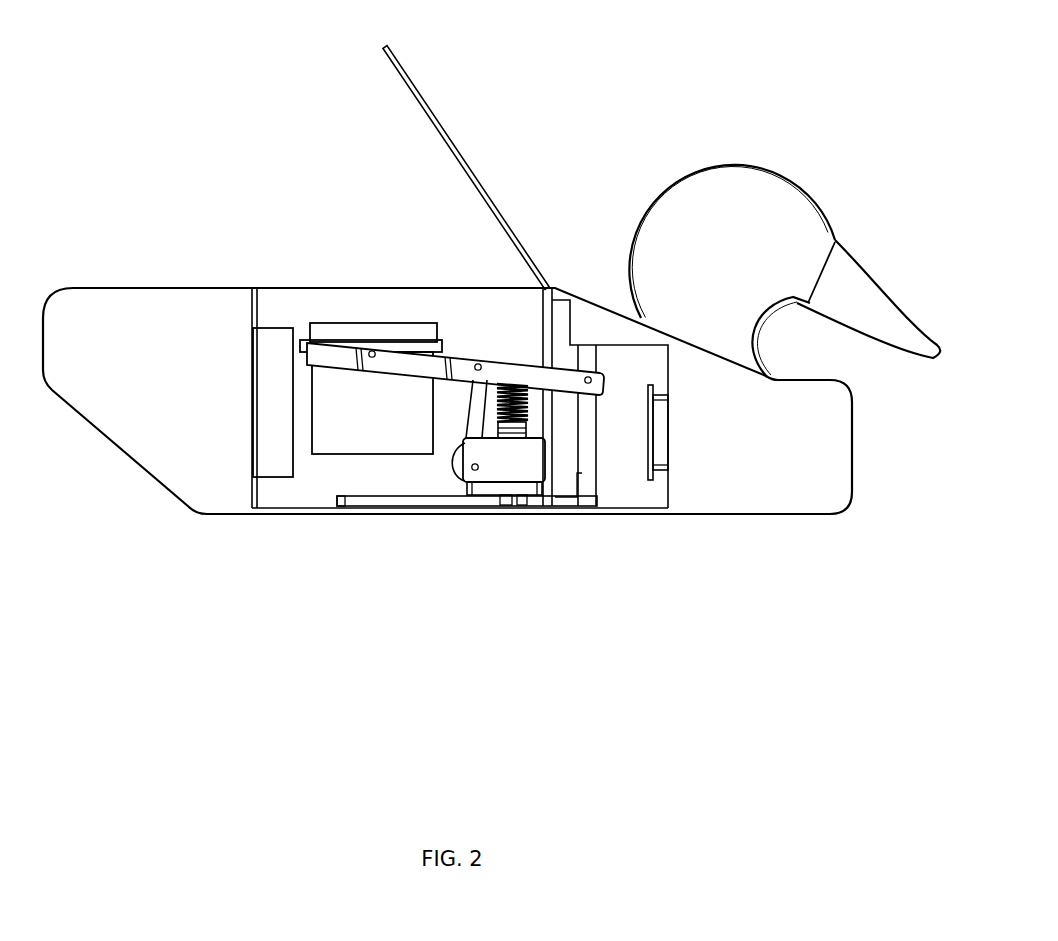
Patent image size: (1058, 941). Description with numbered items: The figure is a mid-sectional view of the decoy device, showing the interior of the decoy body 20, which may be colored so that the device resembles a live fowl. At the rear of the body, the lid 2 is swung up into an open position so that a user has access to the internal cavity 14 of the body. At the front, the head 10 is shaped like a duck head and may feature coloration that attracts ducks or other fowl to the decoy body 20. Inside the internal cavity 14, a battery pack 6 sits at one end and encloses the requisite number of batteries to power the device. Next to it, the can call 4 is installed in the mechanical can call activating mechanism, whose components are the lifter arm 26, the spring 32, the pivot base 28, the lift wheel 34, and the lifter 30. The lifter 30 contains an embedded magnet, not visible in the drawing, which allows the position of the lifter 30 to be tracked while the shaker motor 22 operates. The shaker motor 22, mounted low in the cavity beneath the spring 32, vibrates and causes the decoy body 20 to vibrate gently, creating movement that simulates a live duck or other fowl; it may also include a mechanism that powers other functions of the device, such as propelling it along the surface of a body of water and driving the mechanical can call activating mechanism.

The lid 2 is at (450, 114).
The can call 4 is at (371, 388).
The battery pack 6 is at (273, 402).
The head 10 is at (672, 107).
The internal cavity 14 is at (300, 297).
The decoy body 20 is at (848, 588).
The shaker motor 22 is at (504, 471).
The lifter arm 26 is at (455, 369).
The pivot base 28 is at (597, 442).
The lifter 30 is at (467, 439).
The spring 32 is at (512, 371).
The lift wheel 34 is at (450, 486).